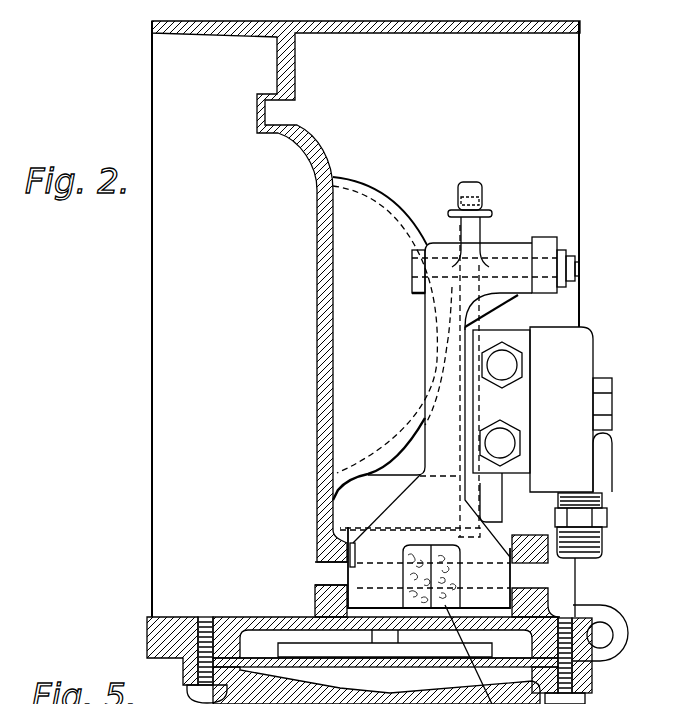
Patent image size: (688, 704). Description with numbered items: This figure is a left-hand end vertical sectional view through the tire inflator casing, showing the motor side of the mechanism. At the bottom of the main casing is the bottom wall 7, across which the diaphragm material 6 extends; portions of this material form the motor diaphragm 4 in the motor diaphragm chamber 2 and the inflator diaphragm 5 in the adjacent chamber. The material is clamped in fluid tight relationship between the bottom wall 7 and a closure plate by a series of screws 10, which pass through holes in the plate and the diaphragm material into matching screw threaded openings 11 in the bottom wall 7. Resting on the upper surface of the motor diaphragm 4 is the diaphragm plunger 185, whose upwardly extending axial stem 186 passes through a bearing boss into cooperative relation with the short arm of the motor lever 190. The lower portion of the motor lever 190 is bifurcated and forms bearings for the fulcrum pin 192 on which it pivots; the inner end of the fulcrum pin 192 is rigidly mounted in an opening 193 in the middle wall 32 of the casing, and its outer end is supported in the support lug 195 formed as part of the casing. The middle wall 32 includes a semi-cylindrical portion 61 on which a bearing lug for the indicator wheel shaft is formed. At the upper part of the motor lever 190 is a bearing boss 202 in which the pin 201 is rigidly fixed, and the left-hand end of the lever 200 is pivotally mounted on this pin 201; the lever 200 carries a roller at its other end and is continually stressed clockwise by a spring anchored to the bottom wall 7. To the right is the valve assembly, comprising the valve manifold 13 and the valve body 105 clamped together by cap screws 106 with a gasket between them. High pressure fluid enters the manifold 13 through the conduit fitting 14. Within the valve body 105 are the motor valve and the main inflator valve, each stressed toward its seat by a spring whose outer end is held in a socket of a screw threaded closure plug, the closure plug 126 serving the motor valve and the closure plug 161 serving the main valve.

The motor diaphragm chamber 2 is at (385, 681).
The motor diaphragm 4 is at (490, 318).
The inflator diaphragm 5 is at (480, 363).
The diaphragm material 6 is at (480, 440).
The bottom wall 7 is at (185, 622).
The screws 10 is at (207, 617).
The screw threaded openings 11 is at (576, 644).
The valve manifold 13 is at (575, 338).
The conduit fitting 14 is at (603, 549).
The middle wall 32 is at (317, 332).
The semi-cylindrical portion 61 is at (383, 206).
The valve body 105 is at (524, 402).
The cap screws 106 is at (610, 410).
The closure plug 126 is at (502, 365).
The closure plug 161 is at (500, 443).
The diaphragm plunger 185 is at (295, 645).
The axial stem 186 is at (395, 640).
The motor lever 190 is at (423, 358).
The fulcrum pin 192 is at (318, 578).
The opening 193 is at (317, 556).
The support lug 195 is at (547, 601).
The lever 200 is at (548, 288).
The pin 201 is at (503, 258).
The bearing boss 202 is at (527, 243).